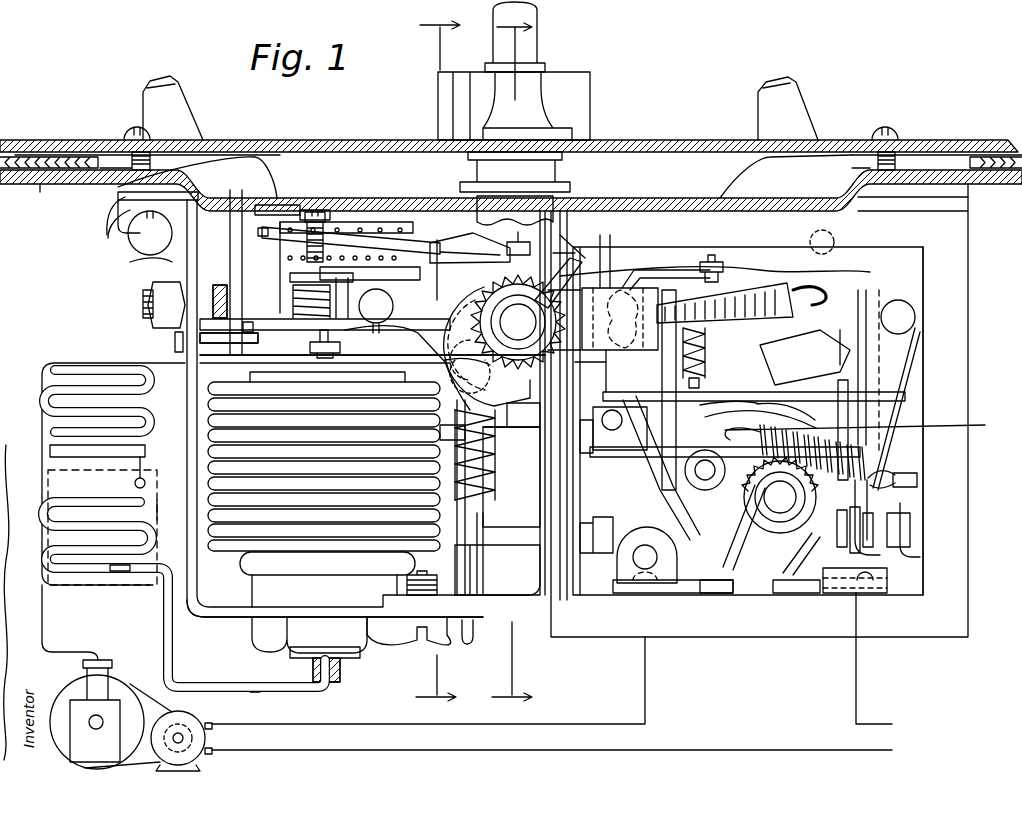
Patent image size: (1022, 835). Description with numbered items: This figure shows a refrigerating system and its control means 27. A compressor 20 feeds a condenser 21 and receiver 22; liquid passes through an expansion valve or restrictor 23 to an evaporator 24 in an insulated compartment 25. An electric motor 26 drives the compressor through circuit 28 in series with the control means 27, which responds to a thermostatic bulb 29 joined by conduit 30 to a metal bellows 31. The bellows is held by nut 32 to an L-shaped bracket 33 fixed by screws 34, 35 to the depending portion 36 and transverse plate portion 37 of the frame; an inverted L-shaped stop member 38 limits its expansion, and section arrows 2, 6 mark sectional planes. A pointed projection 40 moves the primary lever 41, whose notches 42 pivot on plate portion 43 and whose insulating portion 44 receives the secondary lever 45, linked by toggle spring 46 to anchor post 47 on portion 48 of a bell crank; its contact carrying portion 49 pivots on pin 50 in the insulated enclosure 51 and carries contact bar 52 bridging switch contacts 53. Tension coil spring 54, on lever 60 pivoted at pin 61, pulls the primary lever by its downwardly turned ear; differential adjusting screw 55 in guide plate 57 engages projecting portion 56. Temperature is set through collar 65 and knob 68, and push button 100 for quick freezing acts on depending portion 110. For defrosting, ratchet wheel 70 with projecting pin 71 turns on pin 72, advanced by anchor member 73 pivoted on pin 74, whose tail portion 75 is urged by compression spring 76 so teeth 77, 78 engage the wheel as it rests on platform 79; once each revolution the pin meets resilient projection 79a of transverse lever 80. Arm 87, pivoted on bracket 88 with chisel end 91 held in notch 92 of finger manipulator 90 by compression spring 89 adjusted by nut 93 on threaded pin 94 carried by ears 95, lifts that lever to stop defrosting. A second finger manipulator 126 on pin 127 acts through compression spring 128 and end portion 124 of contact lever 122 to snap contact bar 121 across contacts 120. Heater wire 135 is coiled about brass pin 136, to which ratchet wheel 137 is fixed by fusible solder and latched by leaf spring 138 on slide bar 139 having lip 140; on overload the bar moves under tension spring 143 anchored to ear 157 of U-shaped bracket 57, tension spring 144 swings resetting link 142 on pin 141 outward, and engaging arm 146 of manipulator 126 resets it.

The section line 2- 2 is at (438, 364).
The section line 6- 6 is at (512, 364).
The compressor 20 is at (100, 652).
The condenser 21 is at (137, 372).
The receiver 22 is at (140, 447).
The control means 23 is at (148, 482).
The evaporator 24 is at (143, 528).
The insulated compartment 25 is at (160, 510).
The electric motor 26 is at (187, 722).
The control means 27 is at (596, 667).
The electric motor circuit 28 is at (468, 730).
The thermostatic bulb 29 is at (130, 566).
The conduit 30 is at (258, 694).
The metal bellows 31 is at (228, 555).
The nut 32 is at (263, 635).
The L-shaped bracket 33 is at (203, 615).
The screw 34 is at (418, 636).
The screw 35 is at (123, 231).
The depending portion 36 is at (502, 603).
The transverse plate portion 37 is at (68, 180).
The inverted L-shaped stop member 38 is at (213, 362).
The pointed projection 40 is at (312, 340).
The primary lever 41 is at (258, 328).
The notches 42 is at (175, 337).
The depending metal plate portion 43 is at (180, 352).
The insulating portion 44 is at (610, 300).
The secondary lever 45 is at (860, 275).
The toggle spring 46 is at (890, 325).
The anchor post 47 is at (620, 360).
The bell crank lever portion 48 is at (840, 368).
The contact carrying portion 49 is at (860, 390).
The pivot pin 50 is at (898, 313).
The insulated box shaped enclosure 51 is at (950, 440).
The contact bar 52 is at (862, 512).
The switch contacts 53 is at (905, 555).
The tension coil spring 54 is at (488, 480).
The differential adjusting screw 55 is at (500, 378).
The projecting portion 56 is at (853, 410).
The guide plate 57 is at (350, 255).
The lever 60 is at (483, 560).
The pin 61 is at (522, 524).
The collar 65 is at (555, 192).
The temperature regulating knob 68 is at (570, 82).
The ratchet wheel 70 is at (553, 290).
The projecting pin 71 is at (590, 290).
The pin 72 is at (525, 333).
The anchor member 73 is at (430, 330).
The pin 74 is at (375, 322).
The tail portion 75 is at (290, 278).
The compression coil spring 76 is at (293, 300).
The tooth 77 is at (505, 285).
The tooth 78 is at (500, 400).
The platform 79 is at (513, 428).
The resilient projection 79a is at (510, 245).
The transverse lever 80 is at (505, 235).
The arm 87 is at (432, 240).
The bracket 88 is at (372, 222).
The compression spring 89 is at (342, 224).
The finger manipulator 90 is at (180, 118).
The chisel shaped end 91 is at (272, 225).
The notch 92 is at (265, 228).
The adjusting nut 93 is at (312, 212).
The threaded pin 94 is at (170, 263).
The ears 95 is at (170, 238).
The button 100 is at (528, 40).
The molded depending portion 110 is at (540, 455).
The contacts 120 is at (610, 527).
The contact bar 121 is at (632, 530).
The contact lever 122 is at (647, 474).
The end portion 124 is at (757, 258).
The finger manipulator 126 is at (790, 108).
The pin 127 is at (822, 230).
The compression spring 128 is at (742, 357).
The heater wire 135 is at (725, 556).
The brass pin 136 is at (777, 508).
The ratchet wheel 137 is at (740, 510).
The leaf spring 138 is at (842, 478).
The slide bar 139 is at (650, 453).
The lip 140 is at (593, 448).
The pin 141 is at (605, 424).
The resetting link 142 is at (871, 426).
The tension spring 143 is at (883, 470).
The tension spring 144 is at (680, 262).
The engaging arm 146 is at (840, 365).
The ear 157 is at (905, 480).